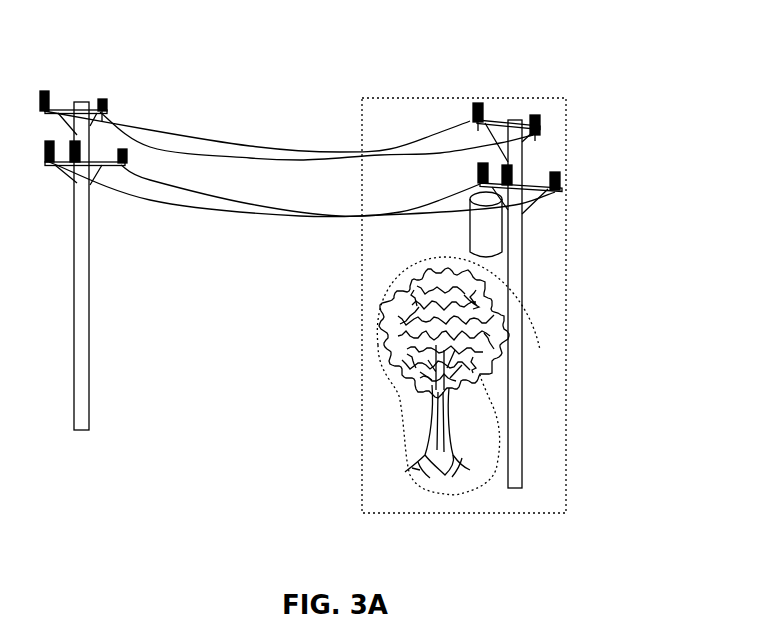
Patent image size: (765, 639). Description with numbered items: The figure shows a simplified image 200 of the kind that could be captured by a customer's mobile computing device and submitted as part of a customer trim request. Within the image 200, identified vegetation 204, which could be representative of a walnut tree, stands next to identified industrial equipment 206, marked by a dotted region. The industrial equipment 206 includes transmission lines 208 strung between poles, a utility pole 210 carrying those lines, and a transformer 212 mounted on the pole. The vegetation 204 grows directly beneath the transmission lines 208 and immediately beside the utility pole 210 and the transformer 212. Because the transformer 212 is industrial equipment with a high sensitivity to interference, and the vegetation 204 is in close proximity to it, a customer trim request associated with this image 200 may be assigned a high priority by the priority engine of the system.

The image 200 is at (123, 33).
The vegetation 204 is at (540, 350).
The industrial equipment 206 is at (568, 128).
The transmission lines 208 is at (437, 152).
The utility pole 210 is at (512, 272).
The transformer 212 is at (500, 243).